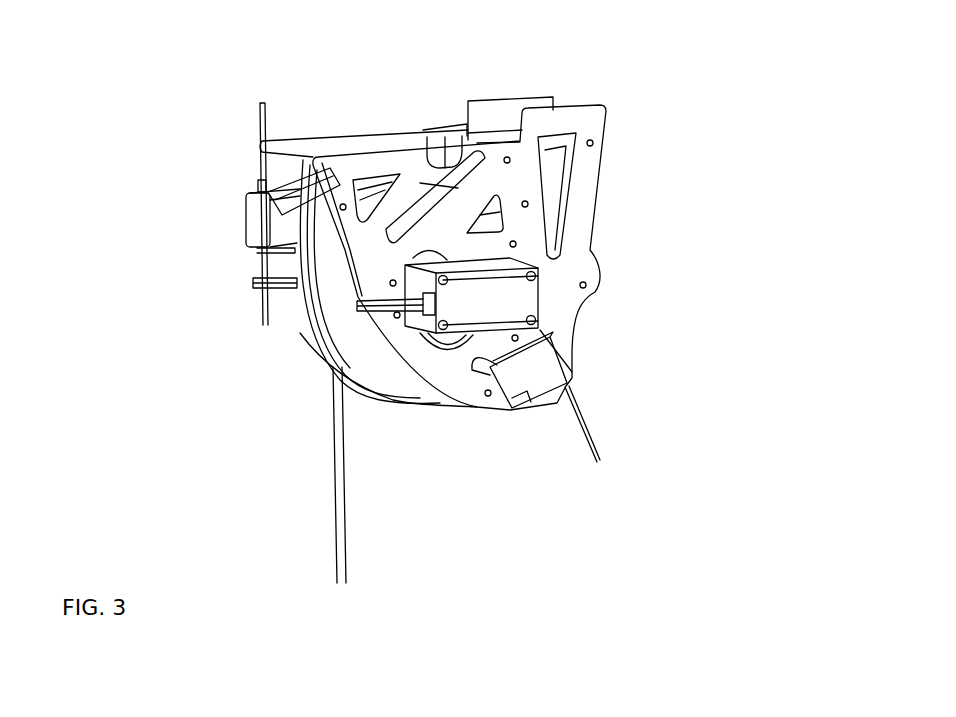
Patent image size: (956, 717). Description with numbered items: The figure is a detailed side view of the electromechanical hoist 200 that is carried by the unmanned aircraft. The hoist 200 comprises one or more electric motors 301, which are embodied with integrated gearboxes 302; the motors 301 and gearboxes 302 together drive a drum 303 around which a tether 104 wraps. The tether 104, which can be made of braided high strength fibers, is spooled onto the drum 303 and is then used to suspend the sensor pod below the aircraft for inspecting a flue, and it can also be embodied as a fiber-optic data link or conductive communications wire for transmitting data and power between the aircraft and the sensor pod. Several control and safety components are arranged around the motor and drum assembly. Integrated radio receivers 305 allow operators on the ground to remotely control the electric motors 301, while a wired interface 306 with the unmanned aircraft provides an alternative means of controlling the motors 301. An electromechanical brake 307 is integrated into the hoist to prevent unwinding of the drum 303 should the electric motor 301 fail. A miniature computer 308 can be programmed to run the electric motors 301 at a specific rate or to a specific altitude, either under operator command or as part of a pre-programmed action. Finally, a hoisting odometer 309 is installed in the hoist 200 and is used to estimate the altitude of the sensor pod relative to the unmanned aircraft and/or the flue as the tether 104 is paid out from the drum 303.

The electromechanical hoist 200 is at (580, 190).
The electric motor 301 is at (540, 292).
The integrated gearbox 302 is at (498, 315).
The drum 303 is at (308, 313).
The integrated radio receiver 305 is at (552, 370).
The wired interface 306 is at (277, 268).
The electromechanical brake 307 is at (293, 192).
The miniature computer 308 is at (250, 207).
The hoisting odometer 309 is at (441, 155).
The tether 104 is at (382, 523).